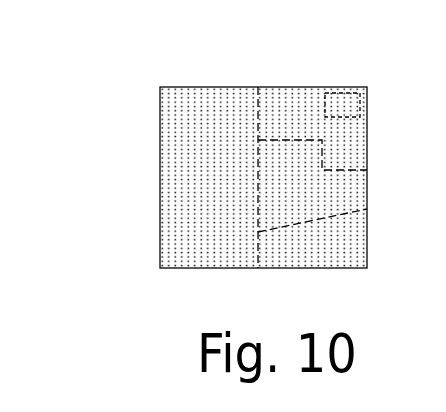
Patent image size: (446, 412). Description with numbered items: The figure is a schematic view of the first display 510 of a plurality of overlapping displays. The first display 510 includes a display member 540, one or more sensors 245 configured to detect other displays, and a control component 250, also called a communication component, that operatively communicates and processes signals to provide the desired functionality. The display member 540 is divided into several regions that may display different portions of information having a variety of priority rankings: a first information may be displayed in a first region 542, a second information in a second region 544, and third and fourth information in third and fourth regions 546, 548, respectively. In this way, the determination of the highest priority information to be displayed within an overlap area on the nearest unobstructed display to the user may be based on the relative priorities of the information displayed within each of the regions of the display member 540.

The first display 510 is at (138, 58).
The control component 250 is at (347, 102).
The sensors 245 is at (172, 248).
The display member 540 is at (172, 270).
The first region 542 is at (226, 126).
The second region 544 is at (304, 124).
The third region 546 is at (304, 188).
The fourth region 548 is at (304, 258).